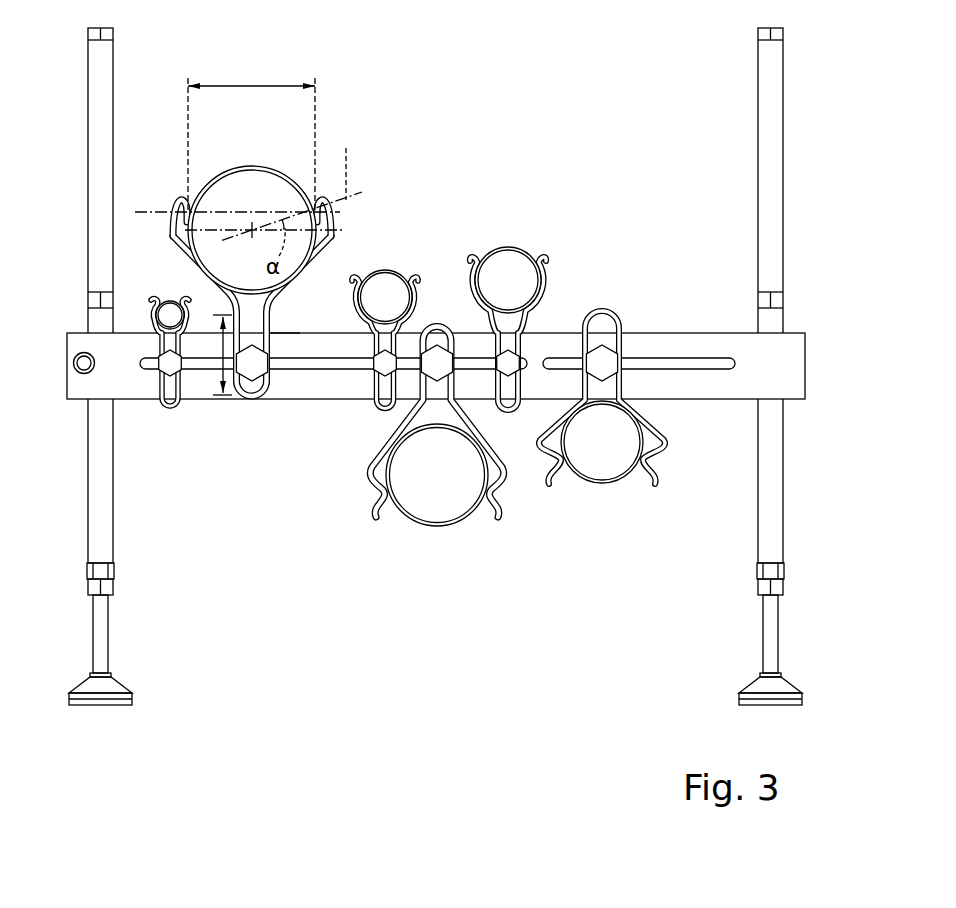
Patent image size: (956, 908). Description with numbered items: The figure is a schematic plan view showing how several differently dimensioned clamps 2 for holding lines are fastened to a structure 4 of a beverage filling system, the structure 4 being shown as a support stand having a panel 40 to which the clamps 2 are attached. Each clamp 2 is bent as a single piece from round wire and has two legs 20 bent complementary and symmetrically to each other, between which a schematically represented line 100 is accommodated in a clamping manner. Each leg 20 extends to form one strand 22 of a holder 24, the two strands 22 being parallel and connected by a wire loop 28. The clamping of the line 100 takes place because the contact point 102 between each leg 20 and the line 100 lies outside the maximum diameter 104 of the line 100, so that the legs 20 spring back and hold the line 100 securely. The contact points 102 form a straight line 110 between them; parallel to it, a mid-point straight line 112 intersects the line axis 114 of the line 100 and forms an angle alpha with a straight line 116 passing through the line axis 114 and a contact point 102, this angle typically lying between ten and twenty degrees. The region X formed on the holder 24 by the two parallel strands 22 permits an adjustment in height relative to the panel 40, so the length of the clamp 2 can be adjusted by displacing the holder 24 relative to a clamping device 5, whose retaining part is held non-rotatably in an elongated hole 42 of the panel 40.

The clamp 2 is at (362, 183).
The structure of the beverage filling system 4 is at (814, 276).
The clamping device 5 is at (249, 364).
The leg 20 is at (168, 228).
The strand 22 is at (269, 324).
The holder 24 is at (281, 350).
The wire loop 28 is at (250, 400).
The panel 40 is at (436, 378).
The elongated hole 42 is at (662, 362).
The line 100 is at (252, 164).
The contact point 102 is at (196, 207).
The maximum diameter 104 is at (251, 135).
The straight line 110 is at (132, 213).
The mid-point straight line 112 is at (200, 247).
The line axis 114 is at (222, 252).
The straight line passing through the line axis and a contact point 116 is at (345, 158).
The region X is at (221, 352).